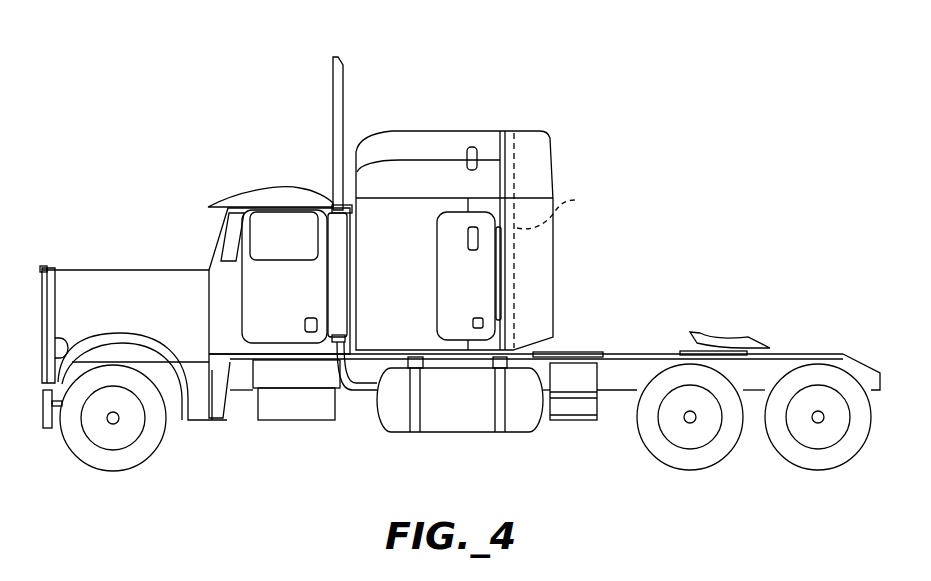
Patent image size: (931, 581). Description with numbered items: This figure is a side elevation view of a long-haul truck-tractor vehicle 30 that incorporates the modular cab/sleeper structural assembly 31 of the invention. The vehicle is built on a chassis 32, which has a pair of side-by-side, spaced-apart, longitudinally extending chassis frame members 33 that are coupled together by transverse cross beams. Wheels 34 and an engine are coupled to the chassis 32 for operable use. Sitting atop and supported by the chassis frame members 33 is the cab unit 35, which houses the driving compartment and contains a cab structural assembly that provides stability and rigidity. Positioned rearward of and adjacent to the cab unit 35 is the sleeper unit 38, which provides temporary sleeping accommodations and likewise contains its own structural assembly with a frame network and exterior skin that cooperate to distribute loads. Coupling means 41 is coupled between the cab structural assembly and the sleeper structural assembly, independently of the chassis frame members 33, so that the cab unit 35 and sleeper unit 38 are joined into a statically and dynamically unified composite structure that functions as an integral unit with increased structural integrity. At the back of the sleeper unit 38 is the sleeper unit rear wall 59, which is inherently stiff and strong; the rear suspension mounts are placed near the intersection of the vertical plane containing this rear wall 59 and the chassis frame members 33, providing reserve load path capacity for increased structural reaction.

The truck-tractor vehicle 30 is at (670, 203).
The modular cab/sleeper structural assembly 31 is at (403, 91).
The chassis 32 is at (836, 326).
The chassis frame members 33 is at (617, 396).
The wheels 34 is at (727, 454).
The cab unit 35 is at (258, 184).
The sleeper unit 38 is at (471, 125).
The coupling means 41 is at (352, 143).
The sleeper unit rear wall 59 is at (561, 210).